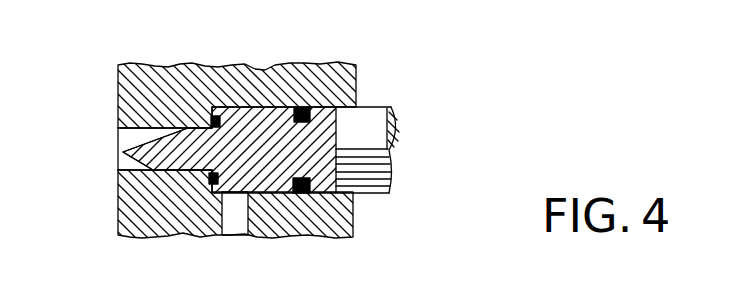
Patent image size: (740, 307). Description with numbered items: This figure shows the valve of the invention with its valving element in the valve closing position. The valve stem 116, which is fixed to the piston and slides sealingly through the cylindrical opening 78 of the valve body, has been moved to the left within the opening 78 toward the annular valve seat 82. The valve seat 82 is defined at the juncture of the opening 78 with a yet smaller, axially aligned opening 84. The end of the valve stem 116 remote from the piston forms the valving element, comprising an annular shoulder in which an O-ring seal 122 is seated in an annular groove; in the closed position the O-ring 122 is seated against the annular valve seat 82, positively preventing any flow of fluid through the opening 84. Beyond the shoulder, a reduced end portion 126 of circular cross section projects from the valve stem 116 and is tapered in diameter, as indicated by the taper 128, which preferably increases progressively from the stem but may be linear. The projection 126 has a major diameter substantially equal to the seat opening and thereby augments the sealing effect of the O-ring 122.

The cylindrical opening 78 is at (258, 103).
The reduced end portion 126 is at (183, 128).
The O-ring seal 122 is at (230, 107).
The axially aligned opening 84 is at (133, 131).
The taper 128 is at (136, 142).
The annular valve seat 82 is at (200, 184).
The valve stem 116 is at (273, 150).